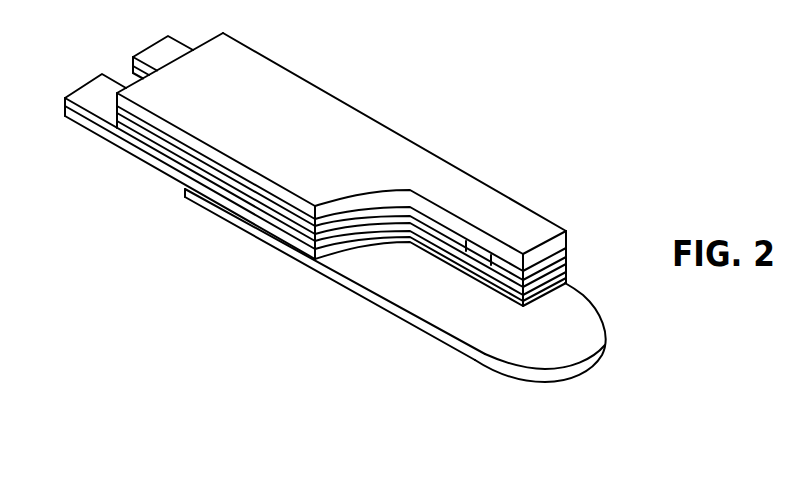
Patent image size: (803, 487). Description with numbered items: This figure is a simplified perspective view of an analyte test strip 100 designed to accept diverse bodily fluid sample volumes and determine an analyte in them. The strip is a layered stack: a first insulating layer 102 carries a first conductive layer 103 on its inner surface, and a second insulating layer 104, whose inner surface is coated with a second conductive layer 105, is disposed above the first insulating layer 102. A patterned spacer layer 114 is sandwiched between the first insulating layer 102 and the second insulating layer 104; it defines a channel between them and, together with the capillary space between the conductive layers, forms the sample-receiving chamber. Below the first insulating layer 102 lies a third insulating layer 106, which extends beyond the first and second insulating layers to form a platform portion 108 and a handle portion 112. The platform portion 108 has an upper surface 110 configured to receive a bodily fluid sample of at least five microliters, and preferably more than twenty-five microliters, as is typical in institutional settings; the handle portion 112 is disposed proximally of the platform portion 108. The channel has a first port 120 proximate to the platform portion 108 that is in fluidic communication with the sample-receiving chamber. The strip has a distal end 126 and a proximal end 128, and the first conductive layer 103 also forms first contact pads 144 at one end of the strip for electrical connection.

The analyte test strip 100 is at (405, 70).
The first insulating layer 102 is at (563, 278).
The first conductive layer 103 is at (563, 268).
The second insulating layer 104 is at (563, 240).
The second conductive layer 105 is at (563, 258).
The third insulating layer 106 is at (290, 245).
The platform portion 108 is at (462, 323).
The upper surface 110 is at (385, 276).
The handle portion 112 is at (573, 343).
The patterned spacer layer 114 is at (178, 155).
The first port 120 is at (477, 253).
The distal end 126 is at (293, 72).
The proximal end 128 is at (503, 157).
The first contact pads 144 is at (164, 51).